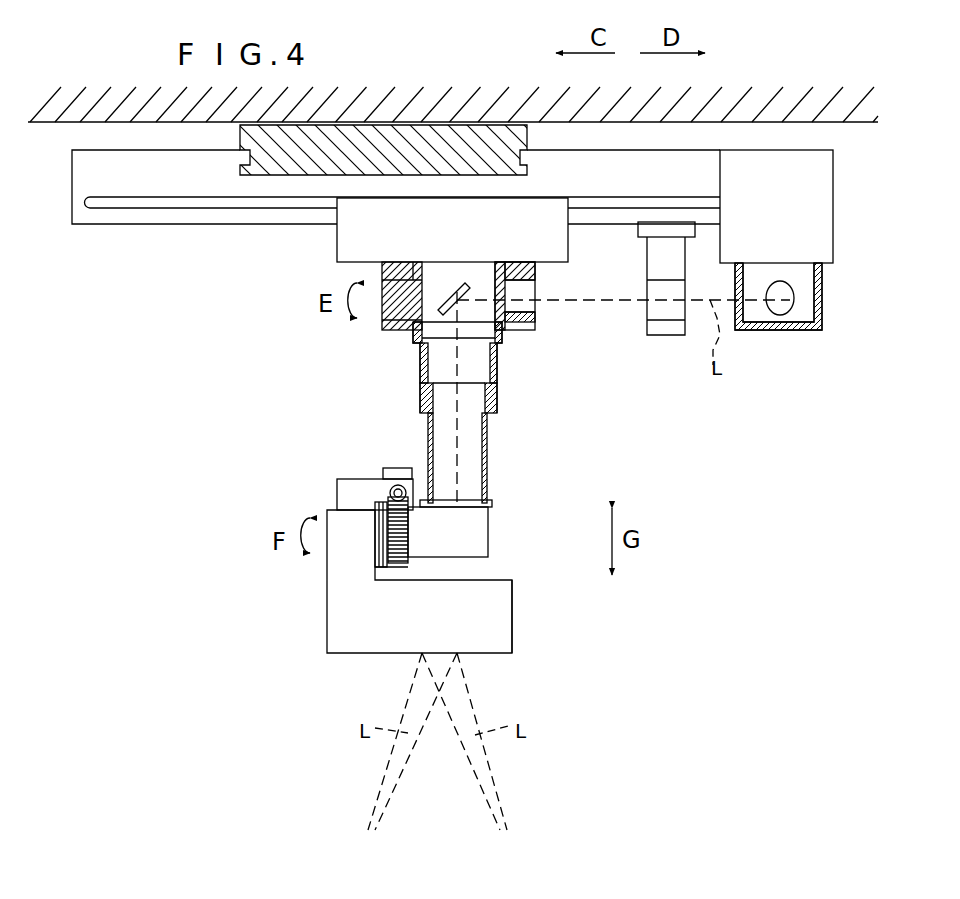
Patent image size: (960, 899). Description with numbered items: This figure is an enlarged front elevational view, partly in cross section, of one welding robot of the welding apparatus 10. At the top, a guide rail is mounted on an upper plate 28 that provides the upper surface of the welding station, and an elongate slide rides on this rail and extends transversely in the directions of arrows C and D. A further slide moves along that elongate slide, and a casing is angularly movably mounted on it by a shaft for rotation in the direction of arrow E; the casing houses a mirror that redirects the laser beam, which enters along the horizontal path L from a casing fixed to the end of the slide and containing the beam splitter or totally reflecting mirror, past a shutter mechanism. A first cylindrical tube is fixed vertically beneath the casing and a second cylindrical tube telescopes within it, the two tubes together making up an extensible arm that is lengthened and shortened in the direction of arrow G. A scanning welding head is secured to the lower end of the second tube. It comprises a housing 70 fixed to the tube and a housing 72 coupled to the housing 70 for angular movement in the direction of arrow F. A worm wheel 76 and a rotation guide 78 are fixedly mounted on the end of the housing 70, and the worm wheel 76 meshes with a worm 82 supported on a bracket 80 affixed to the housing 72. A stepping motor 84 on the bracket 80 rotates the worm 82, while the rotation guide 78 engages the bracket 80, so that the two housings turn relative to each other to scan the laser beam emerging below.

The image reading apparatus 10 is at (245, 428).
The upper plate 28 is at (850, 105).
The housing 70 is at (488, 537).
The housing 72 is at (512, 610).
The worm wheel 76 is at (395, 562).
The rotation guide 78 is at (380, 535).
The bracket 80 is at (352, 493).
The worm 82 is at (407, 503).
The stepping motor 84 is at (397, 470).